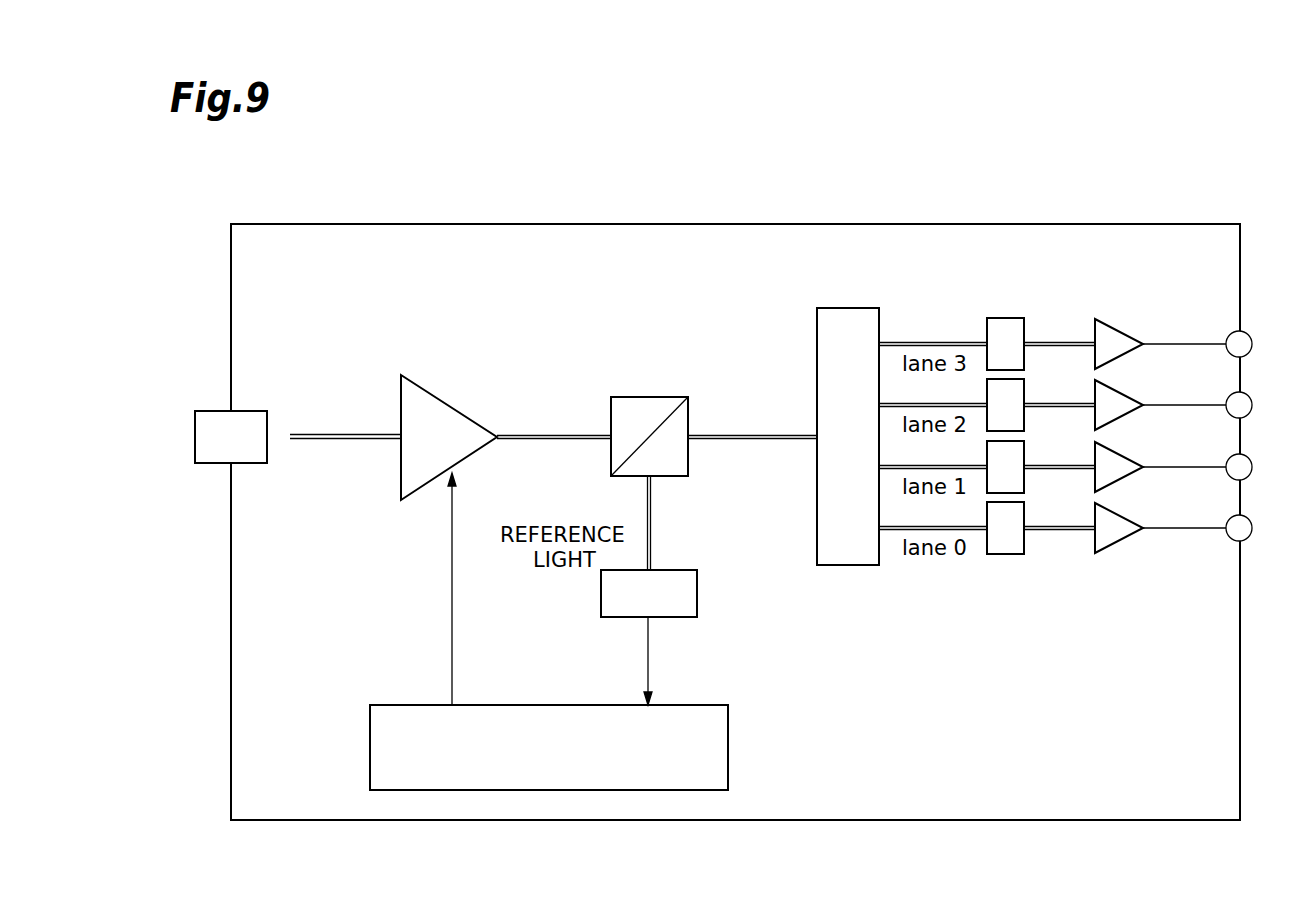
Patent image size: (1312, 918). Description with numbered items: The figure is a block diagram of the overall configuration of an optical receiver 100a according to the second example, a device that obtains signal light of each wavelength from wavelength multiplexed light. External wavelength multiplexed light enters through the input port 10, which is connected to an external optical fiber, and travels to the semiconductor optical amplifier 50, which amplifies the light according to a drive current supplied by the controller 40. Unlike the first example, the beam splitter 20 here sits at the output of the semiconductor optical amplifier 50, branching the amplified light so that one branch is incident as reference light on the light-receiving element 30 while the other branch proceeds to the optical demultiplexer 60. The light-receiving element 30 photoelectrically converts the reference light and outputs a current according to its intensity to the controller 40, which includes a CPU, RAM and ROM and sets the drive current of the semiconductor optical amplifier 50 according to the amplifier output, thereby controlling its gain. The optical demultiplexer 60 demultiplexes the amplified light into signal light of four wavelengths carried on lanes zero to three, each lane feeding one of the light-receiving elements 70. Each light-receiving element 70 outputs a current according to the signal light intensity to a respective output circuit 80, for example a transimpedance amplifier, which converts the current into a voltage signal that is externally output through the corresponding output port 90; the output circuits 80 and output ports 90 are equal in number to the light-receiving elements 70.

The optical receiver 100a is at (1193, 173).
The input port 10 is at (212, 410).
The beam splitter 20 is at (668, 395).
The light-receiving element 30 is at (699, 586).
The controller 40 is at (717, 703).
The semiconductor optical amplifier 50 is at (433, 393).
The optical demultiplexer 60 is at (857, 306).
The light-receiving elements 70 is at (1009, 318).
The output circuits 80 is at (1122, 332).
The output ports 90 is at (1250, 333).